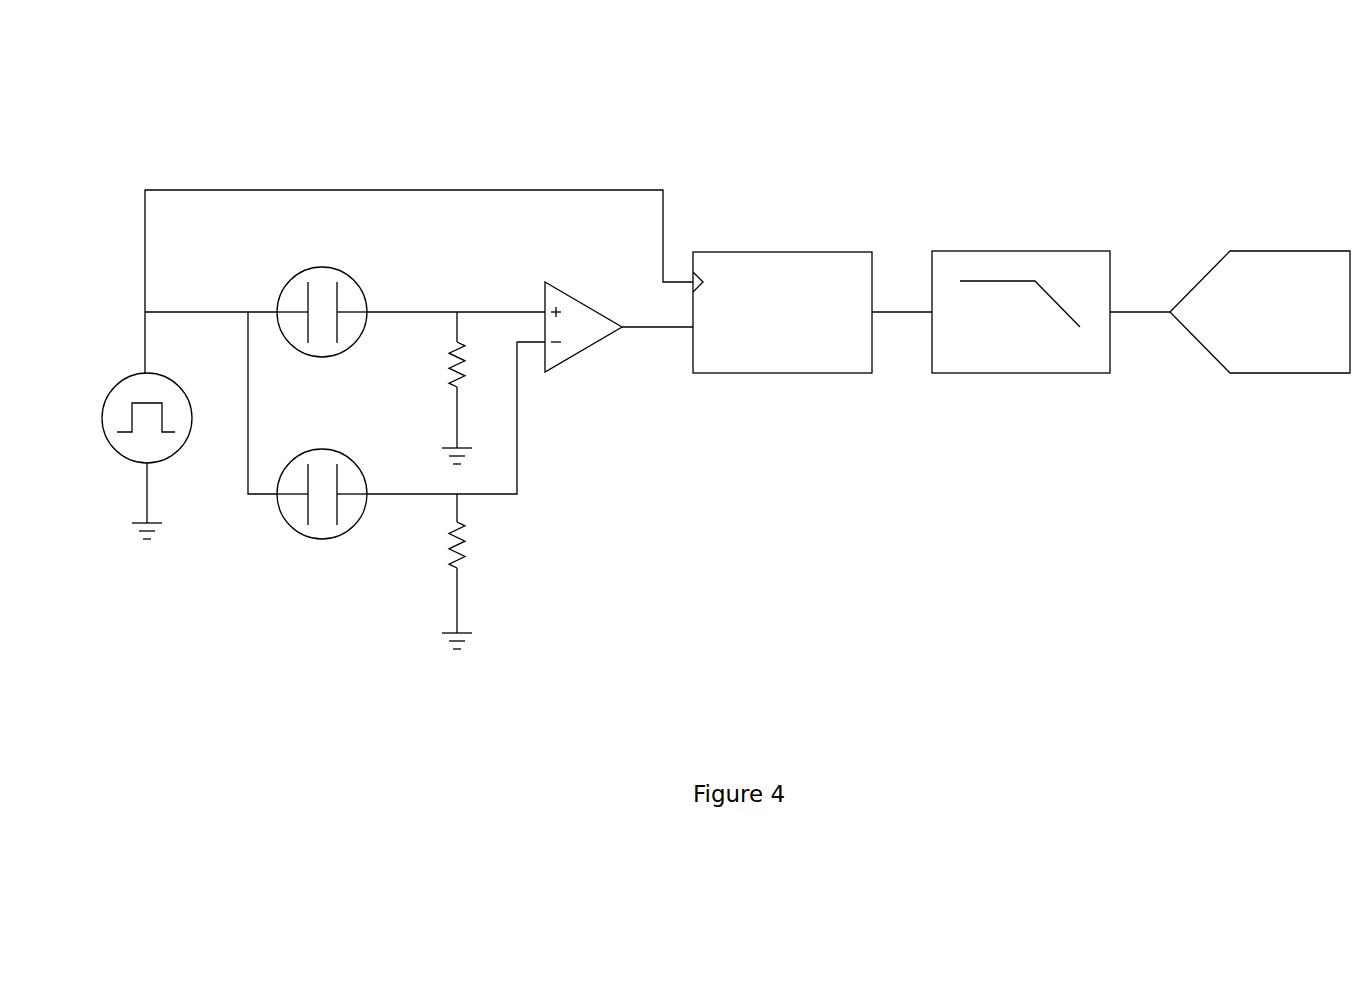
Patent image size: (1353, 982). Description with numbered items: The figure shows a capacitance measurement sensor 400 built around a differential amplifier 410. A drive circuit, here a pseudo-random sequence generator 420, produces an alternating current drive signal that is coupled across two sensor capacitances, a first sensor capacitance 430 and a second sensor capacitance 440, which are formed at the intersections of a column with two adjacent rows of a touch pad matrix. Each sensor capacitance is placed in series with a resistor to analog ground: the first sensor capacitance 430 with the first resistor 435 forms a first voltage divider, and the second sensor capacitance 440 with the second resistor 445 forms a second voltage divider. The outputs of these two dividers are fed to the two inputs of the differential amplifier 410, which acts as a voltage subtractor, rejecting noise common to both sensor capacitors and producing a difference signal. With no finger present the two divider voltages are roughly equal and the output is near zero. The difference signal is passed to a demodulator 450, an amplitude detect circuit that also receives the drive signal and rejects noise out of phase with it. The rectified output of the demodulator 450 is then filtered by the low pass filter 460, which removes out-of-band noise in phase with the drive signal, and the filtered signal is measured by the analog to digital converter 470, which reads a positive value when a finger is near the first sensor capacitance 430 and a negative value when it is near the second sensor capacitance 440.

The capacitance measurement sensor 400 is at (493, 108).
The differential amplifier 410 is at (582, 350).
The pseudo-random sequence generator (PRS) 420 is at (127, 455).
The first sensor capacitance (Csensor1) 430 is at (285, 284).
The resistor R1 435 is at (466, 382).
The second sensor capacitance (Csensor2) 440 is at (284, 519).
The resistor R2 445 is at (466, 567).
The demodulator 450 is at (783, 373).
The low pass filter (LPF) 460 is at (1017, 373).
The analog to digital converter (ADC) 470 is at (1290, 373).